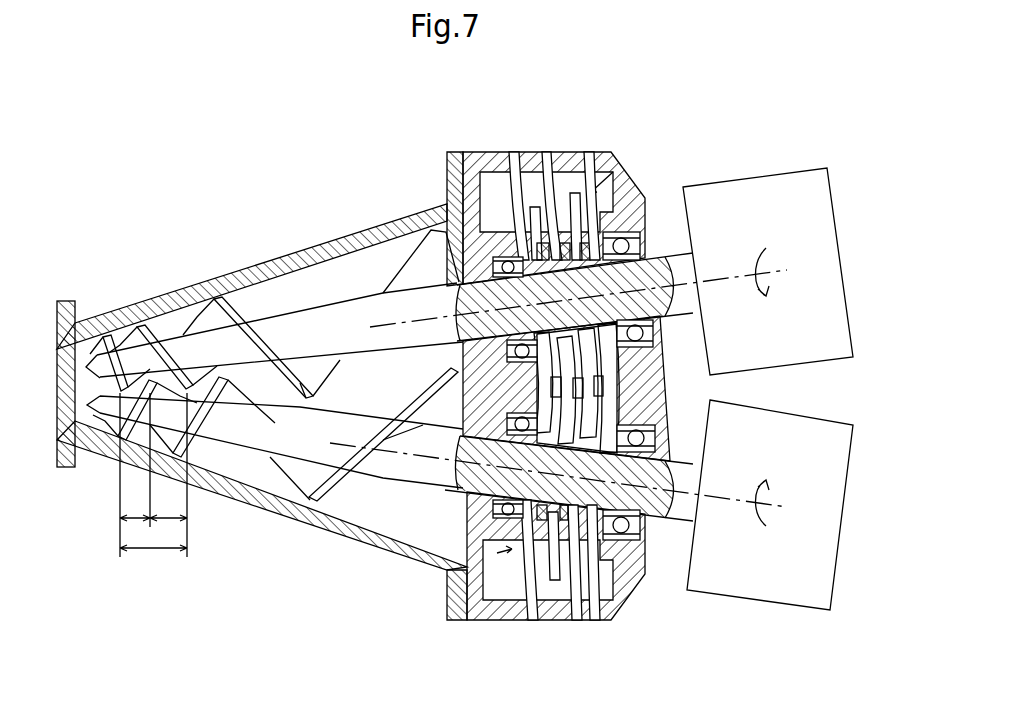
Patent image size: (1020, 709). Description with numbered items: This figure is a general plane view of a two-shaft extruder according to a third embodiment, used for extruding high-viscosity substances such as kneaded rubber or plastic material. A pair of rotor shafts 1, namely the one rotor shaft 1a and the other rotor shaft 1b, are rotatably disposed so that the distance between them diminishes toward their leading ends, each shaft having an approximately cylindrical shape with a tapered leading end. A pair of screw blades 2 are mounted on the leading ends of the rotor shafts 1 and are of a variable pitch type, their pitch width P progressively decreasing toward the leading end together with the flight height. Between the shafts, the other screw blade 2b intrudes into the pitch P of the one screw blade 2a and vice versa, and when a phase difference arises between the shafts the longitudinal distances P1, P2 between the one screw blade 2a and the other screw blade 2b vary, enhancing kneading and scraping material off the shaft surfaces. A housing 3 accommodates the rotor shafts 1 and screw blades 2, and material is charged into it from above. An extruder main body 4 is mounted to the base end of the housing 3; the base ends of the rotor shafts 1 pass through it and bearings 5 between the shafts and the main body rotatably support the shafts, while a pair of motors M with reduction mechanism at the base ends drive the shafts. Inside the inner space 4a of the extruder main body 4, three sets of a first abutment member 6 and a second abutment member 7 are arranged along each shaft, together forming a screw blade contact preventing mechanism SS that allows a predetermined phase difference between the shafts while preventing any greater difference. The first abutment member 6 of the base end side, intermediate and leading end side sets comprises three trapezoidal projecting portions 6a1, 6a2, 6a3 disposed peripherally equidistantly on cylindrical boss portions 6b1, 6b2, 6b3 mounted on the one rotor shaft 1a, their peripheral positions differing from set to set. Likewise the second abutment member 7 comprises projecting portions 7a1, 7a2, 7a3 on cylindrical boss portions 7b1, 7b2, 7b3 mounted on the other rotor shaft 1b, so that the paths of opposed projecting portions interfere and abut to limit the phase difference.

The rotor shafts 1 is at (558, 380).
The one rotor shaft 1a is at (667, 255).
The other rotor shaft 1b is at (673, 516).
The screw blades 2 is at (274, 383).
The one screw blade 2a is at (226, 298).
The other screw blade 2b is at (298, 472).
The housing 3 is at (337, 240).
The extruder main body 4 is at (670, 368).
The inner space 4a is at (515, 208).
The bearings 5 is at (500, 258).
The first abutment member 6 is at (580, 152).
The projecting portions of base end side set first abutment member 6a1 is at (592, 215).
The projecting portions of intermediate side set first abutment member 6a2 is at (574, 210).
The projecting portions of leading end side set first abutment member 6a3 is at (514, 158).
The cylindrical boss portion 6b1 is at (584, 240).
The cylindrical boss portion 6b2 is at (552, 205).
The cylindrical boss portion 6b3 is at (533, 215).
The second abutment member 7 is at (481, 594).
The projecting portions of base end side set second abutment member 7a1 is at (592, 575).
The projecting portions of intermediate side set second abutment member 7a2 is at (572, 583).
The projecting portions of leading end side set second abutment member 7a3 is at (548, 555).
The cylindrical boss portion 7b1 is at (565, 522).
The cylindrical boss portion 7b2 is at (541, 522).
The cylindrical boss portion 7b3 is at (525, 596).
The screw blade contact preventing mechanism SS is at (528, 366).
The motors M is at (770, 185).
The pitch width P is at (153, 482).
The distance P1 is at (135, 506).
The distance P2 is at (168, 506).